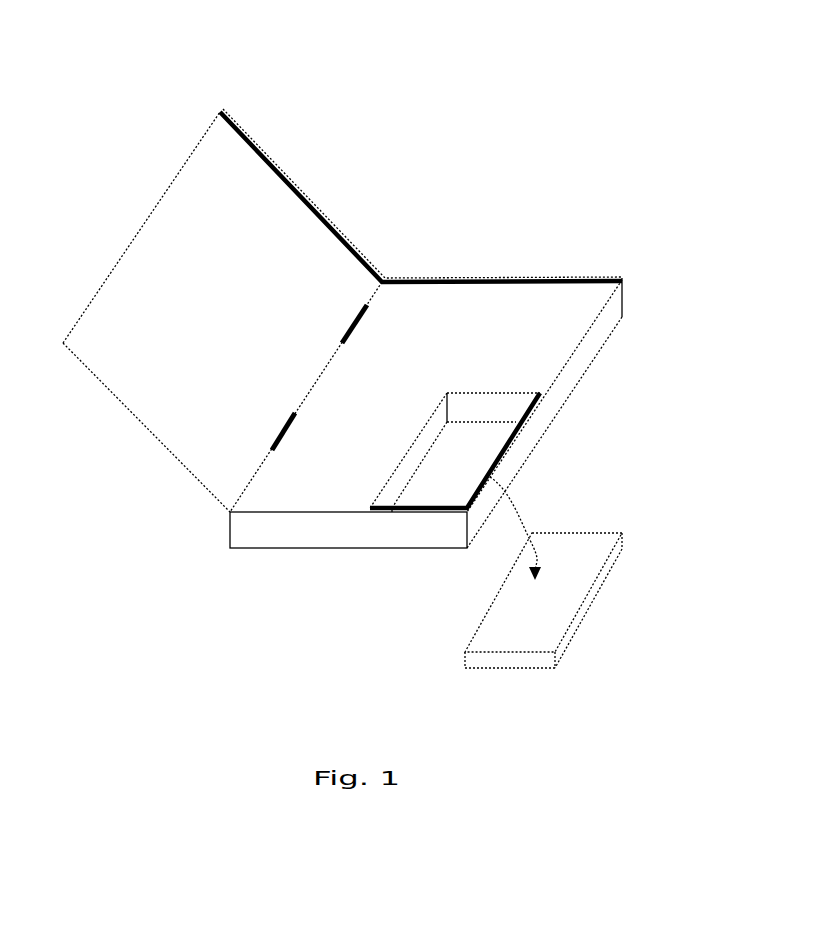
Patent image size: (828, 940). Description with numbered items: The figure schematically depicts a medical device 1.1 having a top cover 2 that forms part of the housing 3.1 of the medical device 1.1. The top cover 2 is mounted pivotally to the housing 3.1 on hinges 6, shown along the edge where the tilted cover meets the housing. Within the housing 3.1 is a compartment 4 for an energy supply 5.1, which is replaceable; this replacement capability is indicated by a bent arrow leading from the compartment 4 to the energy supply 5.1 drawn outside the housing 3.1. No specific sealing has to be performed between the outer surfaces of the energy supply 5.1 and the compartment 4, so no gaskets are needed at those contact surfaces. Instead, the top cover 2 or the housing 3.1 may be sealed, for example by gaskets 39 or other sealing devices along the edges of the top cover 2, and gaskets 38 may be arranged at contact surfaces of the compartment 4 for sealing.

The medical device 1.1 is at (586, 126).
The top cover 2 is at (186, 357).
The housing 3.1 is at (292, 527).
The compartment 4 is at (482, 470).
The energy supply 5.1 is at (598, 584).
The hinges 6 is at (280, 430).
The gaskets 38 is at (513, 437).
The gaskets 39 is at (308, 198).